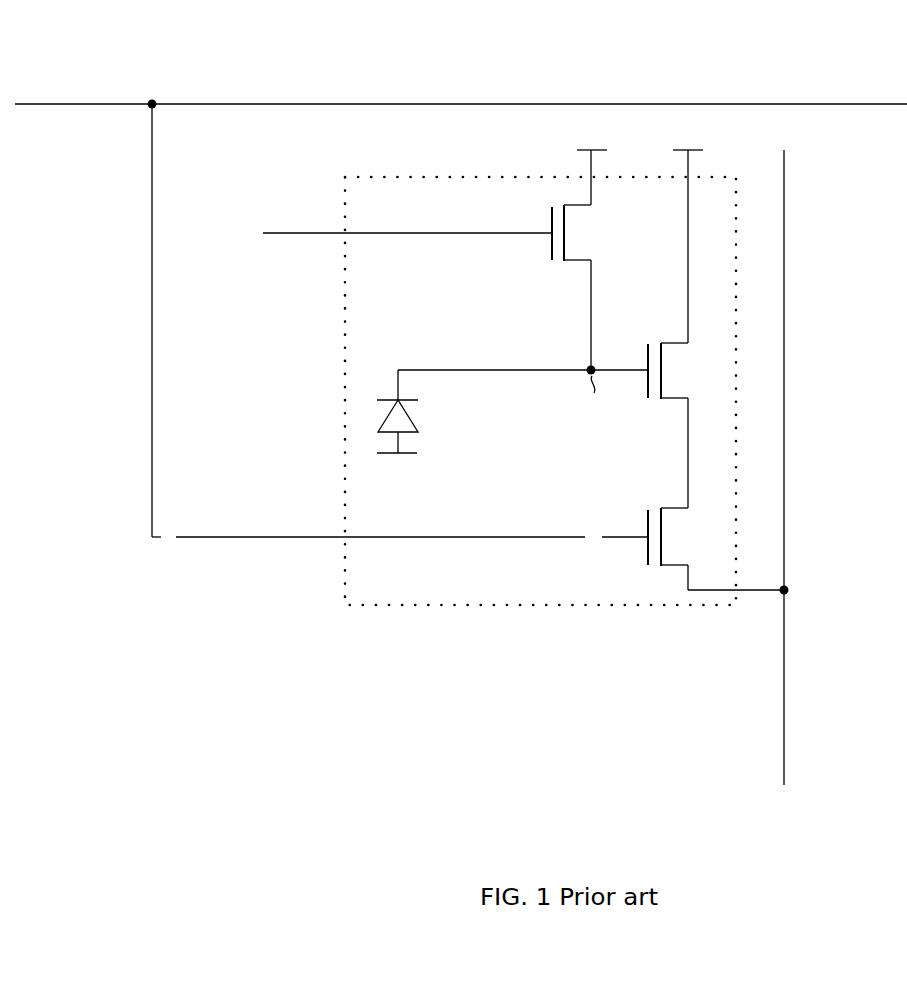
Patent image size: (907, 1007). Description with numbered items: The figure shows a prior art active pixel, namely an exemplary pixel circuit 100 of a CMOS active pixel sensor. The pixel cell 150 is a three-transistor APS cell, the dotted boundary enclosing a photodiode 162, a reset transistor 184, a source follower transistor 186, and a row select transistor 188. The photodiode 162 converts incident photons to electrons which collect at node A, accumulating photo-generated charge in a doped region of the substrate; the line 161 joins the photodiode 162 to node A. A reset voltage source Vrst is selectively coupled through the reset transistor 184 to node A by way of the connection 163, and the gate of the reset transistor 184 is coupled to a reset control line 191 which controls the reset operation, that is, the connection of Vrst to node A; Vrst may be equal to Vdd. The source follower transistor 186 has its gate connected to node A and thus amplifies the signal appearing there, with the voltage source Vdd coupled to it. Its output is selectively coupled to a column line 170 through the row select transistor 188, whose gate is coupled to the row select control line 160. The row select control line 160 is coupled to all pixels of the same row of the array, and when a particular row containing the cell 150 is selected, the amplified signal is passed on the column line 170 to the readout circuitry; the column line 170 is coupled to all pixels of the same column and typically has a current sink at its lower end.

The pixel circuit 100 is at (790, 15).
The 3T APS pixel cell 150 is at (395, 594).
The row select control line 160 is at (530, 536).
The photodiode connection line 161 is at (472, 370).
The photodiode 162 is at (413, 428).
The node connection line 163 is at (593, 320).
The column line 170 is at (785, 321).
The reset transistor 184 is at (569, 234).
The source follower transistor 186 is at (663, 369).
The row select transistor 188 is at (663, 534).
The reset control line 191 is at (378, 233).